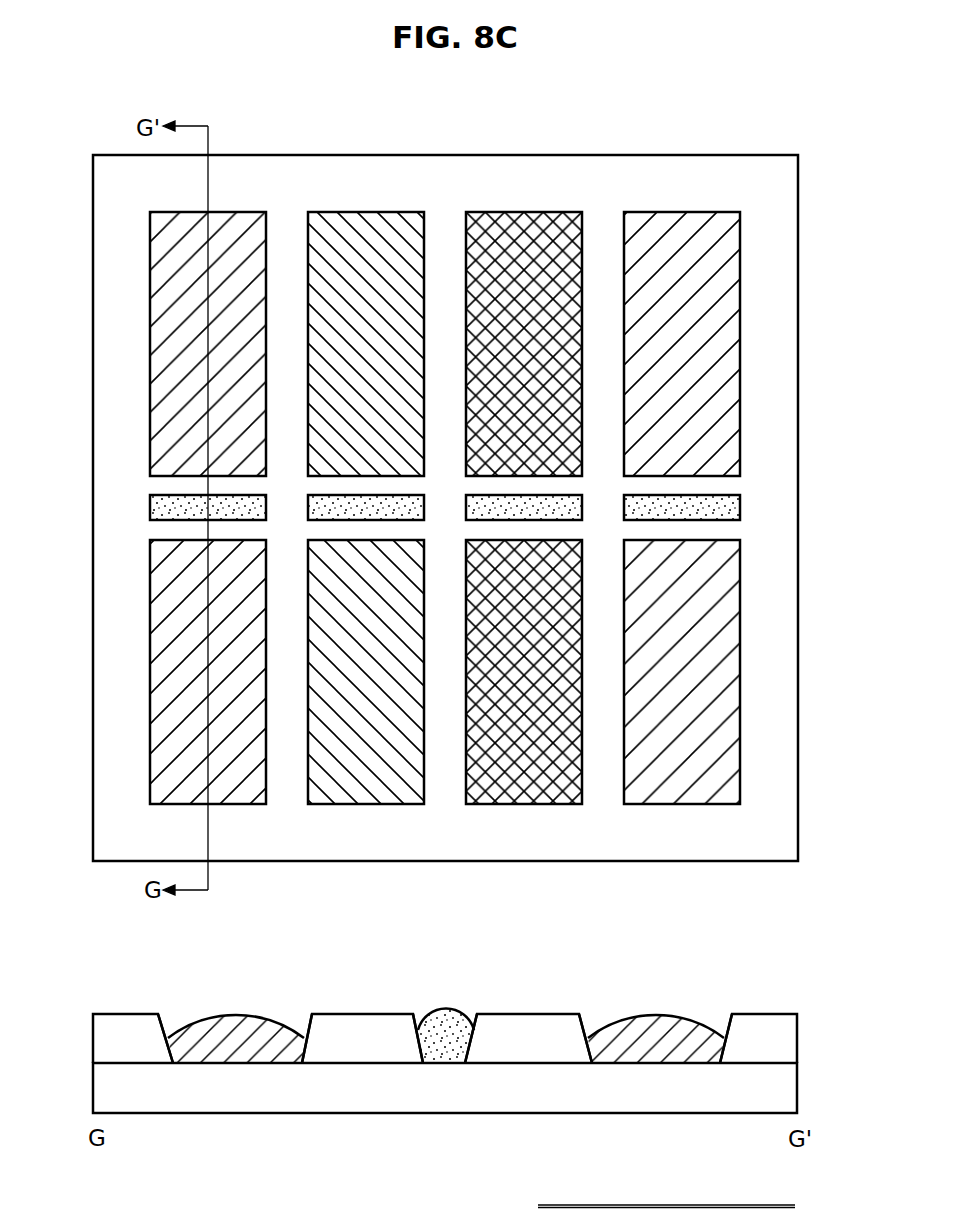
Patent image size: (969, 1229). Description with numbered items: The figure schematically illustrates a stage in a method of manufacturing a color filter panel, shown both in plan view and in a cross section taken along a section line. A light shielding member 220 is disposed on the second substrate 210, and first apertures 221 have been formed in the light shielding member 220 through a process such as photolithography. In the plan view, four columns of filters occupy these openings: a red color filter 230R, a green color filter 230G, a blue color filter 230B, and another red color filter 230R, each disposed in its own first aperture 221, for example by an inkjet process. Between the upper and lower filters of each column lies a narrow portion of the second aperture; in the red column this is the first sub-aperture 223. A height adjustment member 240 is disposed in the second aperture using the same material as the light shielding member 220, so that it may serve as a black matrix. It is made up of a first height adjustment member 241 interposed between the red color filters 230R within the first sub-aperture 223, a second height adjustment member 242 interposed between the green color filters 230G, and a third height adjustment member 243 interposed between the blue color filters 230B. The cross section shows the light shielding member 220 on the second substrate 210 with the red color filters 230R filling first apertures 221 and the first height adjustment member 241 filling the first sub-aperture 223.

The second substrate 210 is at (782, 1090).
The light shielding member 220 is at (443, 177).
The first aperture 221 is at (173, 1027).
The first sub-aperture 223 is at (420, 1027).
The red color filter 230R is at (240, 228).
The green color filter 230G is at (363, 228).
The blue color filter 230B is at (527, 228).
The height adjustment member 240 is at (666, 1192).
The first height adjustment member 241 is at (168, 507).
The second height adjustment member 242 is at (382, 512).
The third height adjustment member 243 is at (545, 512).